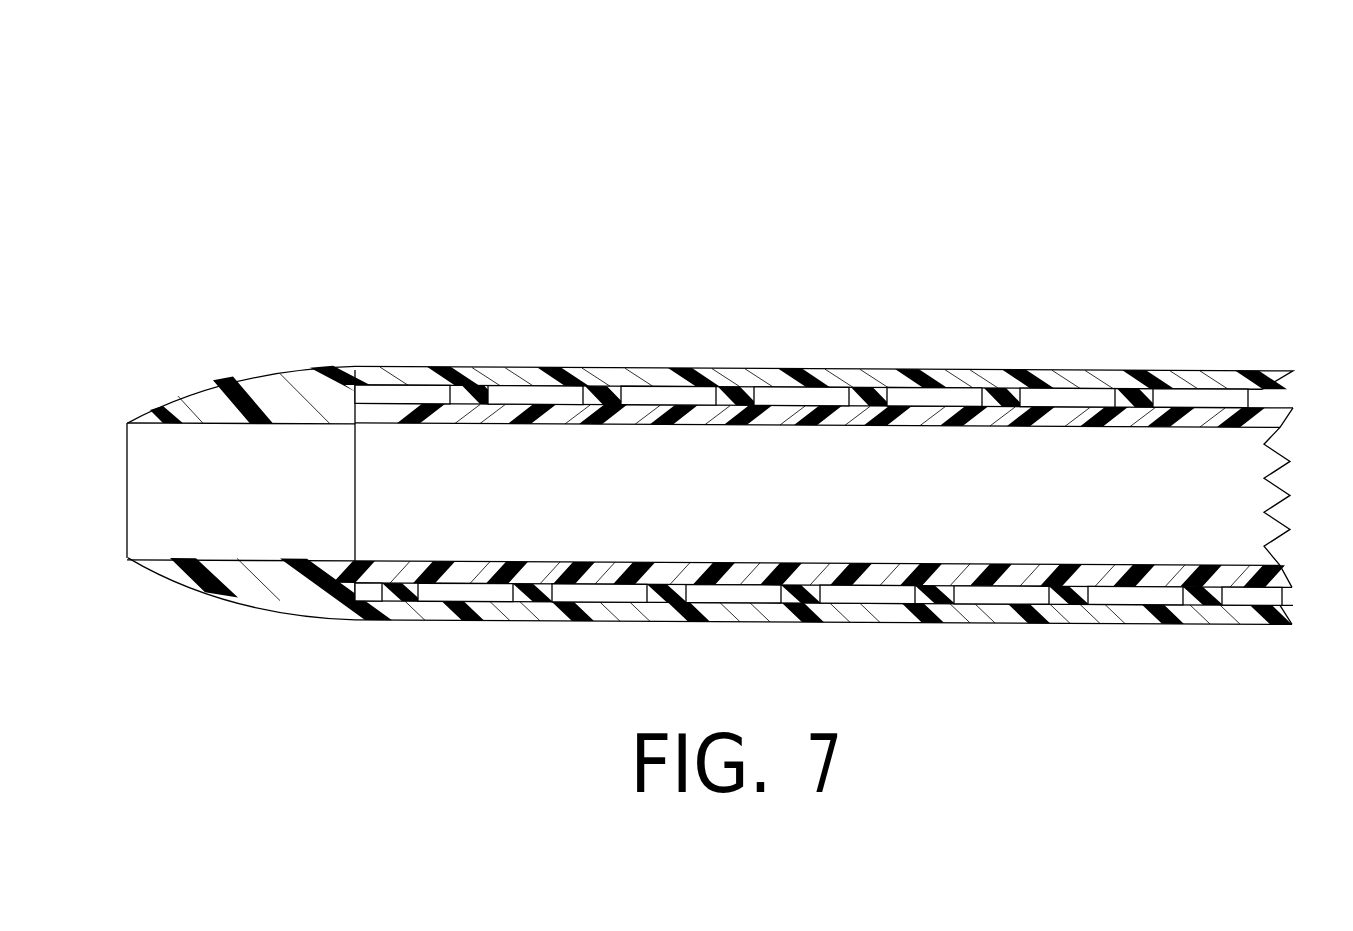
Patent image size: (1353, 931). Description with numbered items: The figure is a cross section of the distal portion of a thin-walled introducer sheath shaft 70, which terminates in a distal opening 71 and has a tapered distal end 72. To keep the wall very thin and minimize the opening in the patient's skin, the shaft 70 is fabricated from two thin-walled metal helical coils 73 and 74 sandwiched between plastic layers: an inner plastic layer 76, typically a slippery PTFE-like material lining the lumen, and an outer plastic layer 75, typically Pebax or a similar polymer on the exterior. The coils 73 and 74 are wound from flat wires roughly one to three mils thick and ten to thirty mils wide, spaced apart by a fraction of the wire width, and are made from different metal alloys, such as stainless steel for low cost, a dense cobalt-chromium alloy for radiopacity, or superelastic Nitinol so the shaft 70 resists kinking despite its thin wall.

The sheath shaft 70 is at (246, 246).
The distal opening 71 is at (127, 520).
The tapered distal end 72 is at (232, 400).
The helical metal coil 73 is at (522, 385).
The helical metal coil 74 is at (398, 385).
The outer plastic layer 75 is at (1047, 370).
The inner plastic layer 76 is at (798, 428).